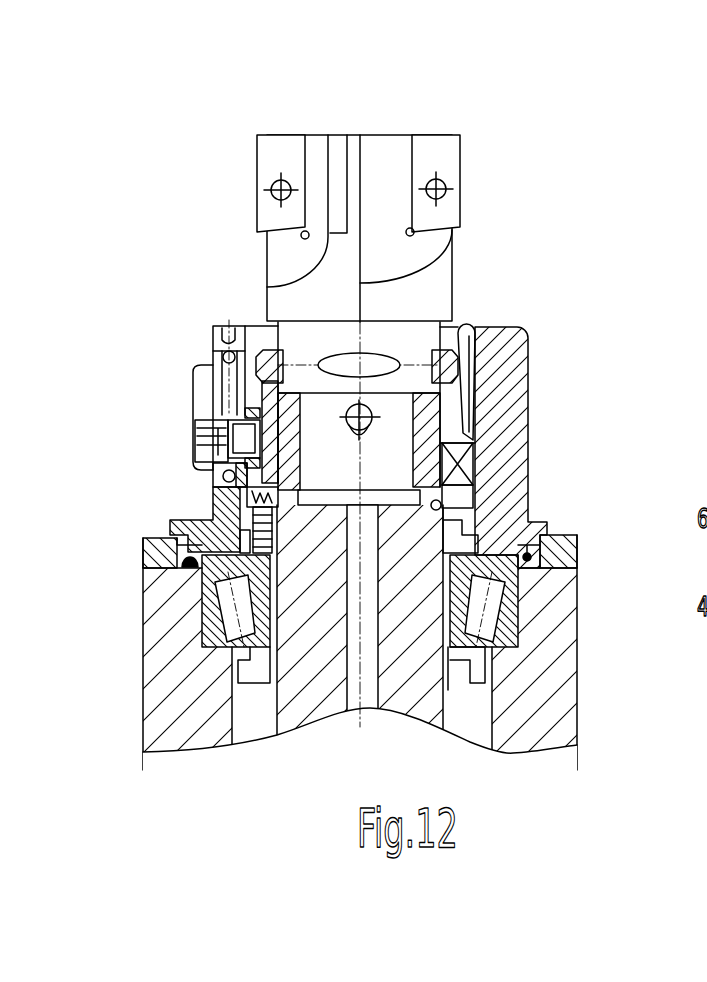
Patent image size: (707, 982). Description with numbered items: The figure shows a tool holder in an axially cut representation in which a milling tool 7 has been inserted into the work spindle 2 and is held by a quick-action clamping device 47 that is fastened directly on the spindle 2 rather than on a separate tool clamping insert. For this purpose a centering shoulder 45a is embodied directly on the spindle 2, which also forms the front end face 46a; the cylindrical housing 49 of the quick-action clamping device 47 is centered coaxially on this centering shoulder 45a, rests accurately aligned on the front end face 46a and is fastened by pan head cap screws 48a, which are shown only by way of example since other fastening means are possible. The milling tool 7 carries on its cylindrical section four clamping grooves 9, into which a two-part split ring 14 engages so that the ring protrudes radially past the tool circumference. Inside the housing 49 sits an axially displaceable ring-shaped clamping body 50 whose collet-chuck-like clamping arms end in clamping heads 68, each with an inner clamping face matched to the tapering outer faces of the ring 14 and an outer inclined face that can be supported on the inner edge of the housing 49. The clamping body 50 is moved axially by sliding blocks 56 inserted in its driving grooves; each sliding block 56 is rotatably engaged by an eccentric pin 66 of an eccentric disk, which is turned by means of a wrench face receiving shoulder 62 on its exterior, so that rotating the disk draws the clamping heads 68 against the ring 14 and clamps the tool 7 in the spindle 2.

The spindle 2 is at (305, 692).
The milling tool 7 is at (378, 165).
The clamping grooves 9 is at (377, 355).
The split ring 14 is at (476, 335).
The quick-action clamping device 47 is at (548, 336).
The cylindrical housing 49 is at (500, 390).
The ring-shaped clamping body 50 is at (478, 442).
The centering shoulder 45a is at (455, 468).
The front end face 46a is at (533, 518).
The pan head cap screws 48a is at (212, 500).
The sliding block 56 is at (258, 462).
The wrench face receiving shoulder 62 is at (205, 380).
The eccentric pin 66 is at (215, 440).
The clamping head 68 is at (468, 330).